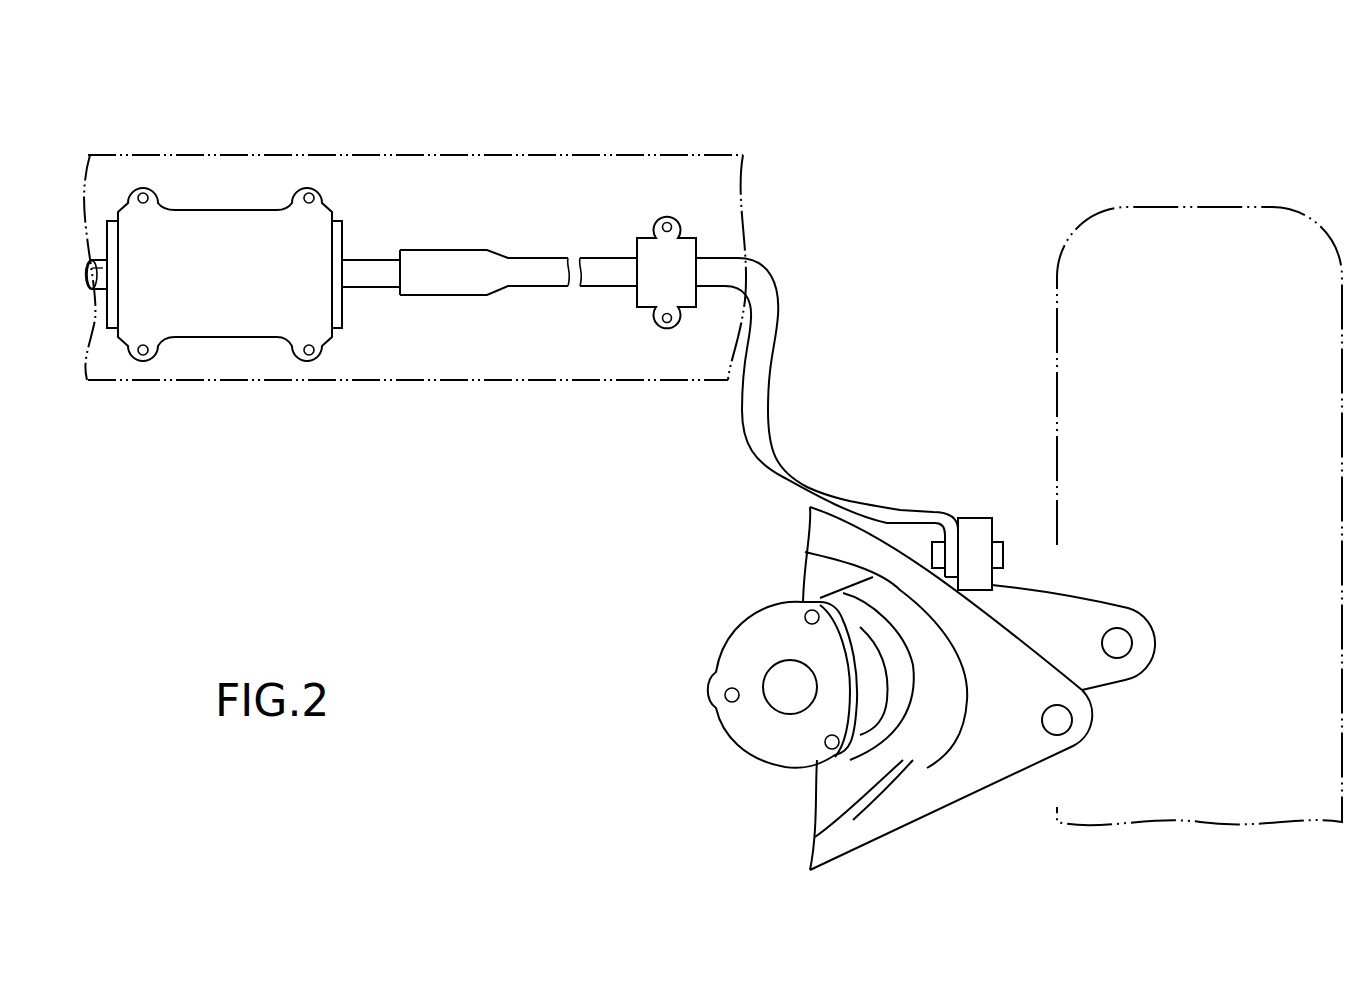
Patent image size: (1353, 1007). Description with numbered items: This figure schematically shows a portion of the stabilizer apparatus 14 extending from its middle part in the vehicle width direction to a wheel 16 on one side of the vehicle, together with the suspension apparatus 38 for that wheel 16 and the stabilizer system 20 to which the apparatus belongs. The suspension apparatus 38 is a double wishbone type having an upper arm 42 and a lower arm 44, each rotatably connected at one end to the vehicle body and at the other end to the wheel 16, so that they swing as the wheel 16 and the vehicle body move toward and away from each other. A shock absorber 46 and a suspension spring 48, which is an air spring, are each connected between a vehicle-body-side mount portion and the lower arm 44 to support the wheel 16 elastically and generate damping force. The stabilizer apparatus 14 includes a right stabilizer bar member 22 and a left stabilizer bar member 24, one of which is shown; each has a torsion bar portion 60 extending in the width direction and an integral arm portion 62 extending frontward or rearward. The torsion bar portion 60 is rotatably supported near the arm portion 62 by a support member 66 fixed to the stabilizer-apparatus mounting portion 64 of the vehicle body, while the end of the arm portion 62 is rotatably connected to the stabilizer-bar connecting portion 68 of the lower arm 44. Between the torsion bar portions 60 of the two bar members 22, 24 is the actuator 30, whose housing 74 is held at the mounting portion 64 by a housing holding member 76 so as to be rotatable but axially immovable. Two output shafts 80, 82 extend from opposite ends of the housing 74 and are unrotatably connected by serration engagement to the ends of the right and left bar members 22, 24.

The stabilizer apparatus 14 is at (783, 80).
The wheel 16 is at (1148, 217).
The wheel speed sensor unit 20 is at (541, 222).
The right stabilizer bar member 22 is at (587, 236).
The left stabilizer bar member 24 is at (717, 272).
The actuator 30 is at (224, 284).
The suspension apparatus 38 is at (665, 644).
The upper arm 42 is at (990, 770).
The lower arm 44 is at (1060, 612).
The shock absorber 46 is at (743, 793).
The suspension spring 48 is at (815, 797).
The torsion bar portion 60 is at (526, 265).
The arm portion 62 is at (808, 430).
The stabilizer-apparatus mounting portion 64 is at (418, 348).
The support member 66 is at (685, 242).
The stabilizer-bar connecting portion 68 is at (980, 526).
The housing 74 is at (337, 318).
The housing holding member 76 is at (222, 322).
The output shaft 80 is at (381, 270).
The output shaft 82 is at (100, 262).